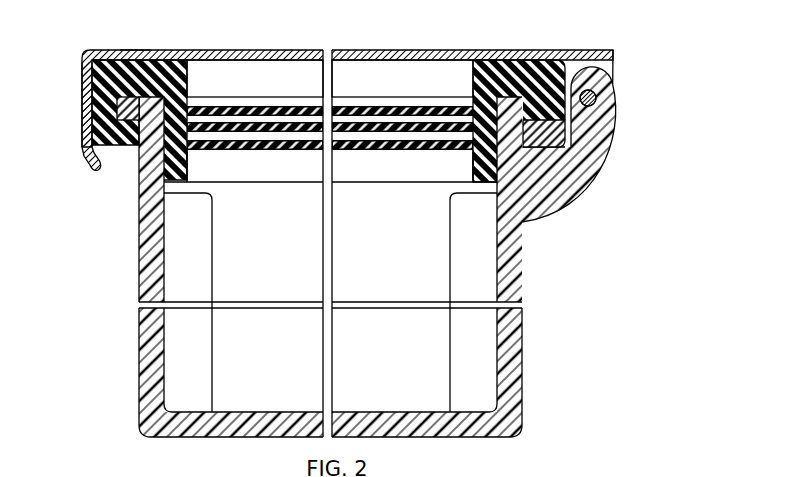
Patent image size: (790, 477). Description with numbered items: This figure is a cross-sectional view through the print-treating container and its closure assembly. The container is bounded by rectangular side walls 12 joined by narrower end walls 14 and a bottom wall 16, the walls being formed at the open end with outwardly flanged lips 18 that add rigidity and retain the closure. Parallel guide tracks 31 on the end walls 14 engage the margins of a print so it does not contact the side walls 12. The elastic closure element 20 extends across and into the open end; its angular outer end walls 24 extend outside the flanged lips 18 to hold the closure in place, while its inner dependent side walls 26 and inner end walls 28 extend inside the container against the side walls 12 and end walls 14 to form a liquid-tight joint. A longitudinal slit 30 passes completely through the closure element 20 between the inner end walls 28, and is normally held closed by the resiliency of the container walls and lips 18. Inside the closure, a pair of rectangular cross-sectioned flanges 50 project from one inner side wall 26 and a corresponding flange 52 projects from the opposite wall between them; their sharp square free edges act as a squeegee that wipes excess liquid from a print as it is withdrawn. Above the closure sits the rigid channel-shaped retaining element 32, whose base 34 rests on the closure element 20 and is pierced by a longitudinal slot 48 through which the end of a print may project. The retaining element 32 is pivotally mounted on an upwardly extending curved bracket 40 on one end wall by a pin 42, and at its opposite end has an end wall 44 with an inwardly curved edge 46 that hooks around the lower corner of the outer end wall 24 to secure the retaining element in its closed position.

The side walls 12 is at (292, 251).
The end walls 14 is at (142, 262).
The bottom wall 16 is at (378, 410).
The outwardly flanged lips 18 is at (115, 100).
The closure element 20 is at (123, 46).
The outer end walls 24 is at (103, 128).
The inner dependent side walls 26 is at (301, 173).
The inner end walls 28 is at (190, 163).
The longitudinal slit 30 is at (366, 62).
The guide tracks 31 is at (206, 235).
The retaining element 32 is at (488, 46).
The base 34 is at (136, 50).
The curved bracket 40 is at (594, 180).
The pin 42 is at (598, 96).
The end wall 44 is at (82, 82).
The inwardly curved edge 46 is at (104, 152).
The longitudinal slot 48 is at (252, 50).
The flanges 50 is at (258, 140).
The flange 52 is at (396, 126).